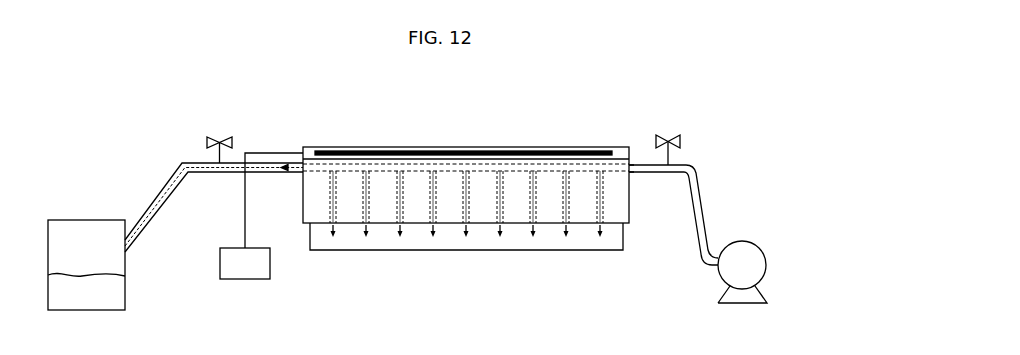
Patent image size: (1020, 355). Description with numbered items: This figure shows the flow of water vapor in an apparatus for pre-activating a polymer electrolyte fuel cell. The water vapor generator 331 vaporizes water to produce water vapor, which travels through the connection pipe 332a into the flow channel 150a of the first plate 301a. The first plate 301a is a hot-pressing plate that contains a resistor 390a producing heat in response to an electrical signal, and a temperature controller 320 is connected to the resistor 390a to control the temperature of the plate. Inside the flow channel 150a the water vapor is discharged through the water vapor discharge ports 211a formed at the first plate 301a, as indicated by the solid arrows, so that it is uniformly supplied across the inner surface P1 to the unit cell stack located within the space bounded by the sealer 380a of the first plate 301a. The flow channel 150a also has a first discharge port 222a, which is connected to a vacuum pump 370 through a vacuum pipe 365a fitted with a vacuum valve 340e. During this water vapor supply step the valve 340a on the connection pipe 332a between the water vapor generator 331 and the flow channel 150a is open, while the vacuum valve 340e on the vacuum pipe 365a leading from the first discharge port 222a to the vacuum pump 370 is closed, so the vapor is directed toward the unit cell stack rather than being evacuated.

The water vapor generator 331 is at (125, 287).
The connection pipe 332a is at (172, 177).
The valve 340a is at (233, 143).
The temperature controller 320 is at (220, 250).
The first plate 301a is at (437, 147).
The resistor 390a is at (510, 155).
The flow channel 150a is at (362, 165).
The water vapor discharge port 211a is at (495, 228).
The sealer 380a is at (323, 243).
The first discharge port 222a is at (632, 165).
The inner surface P1 is at (629, 223).
The vacuum valve 340e is at (682, 142).
The vacuum pipe 365a is at (702, 210).
The vacuum pump 370 is at (766, 265).